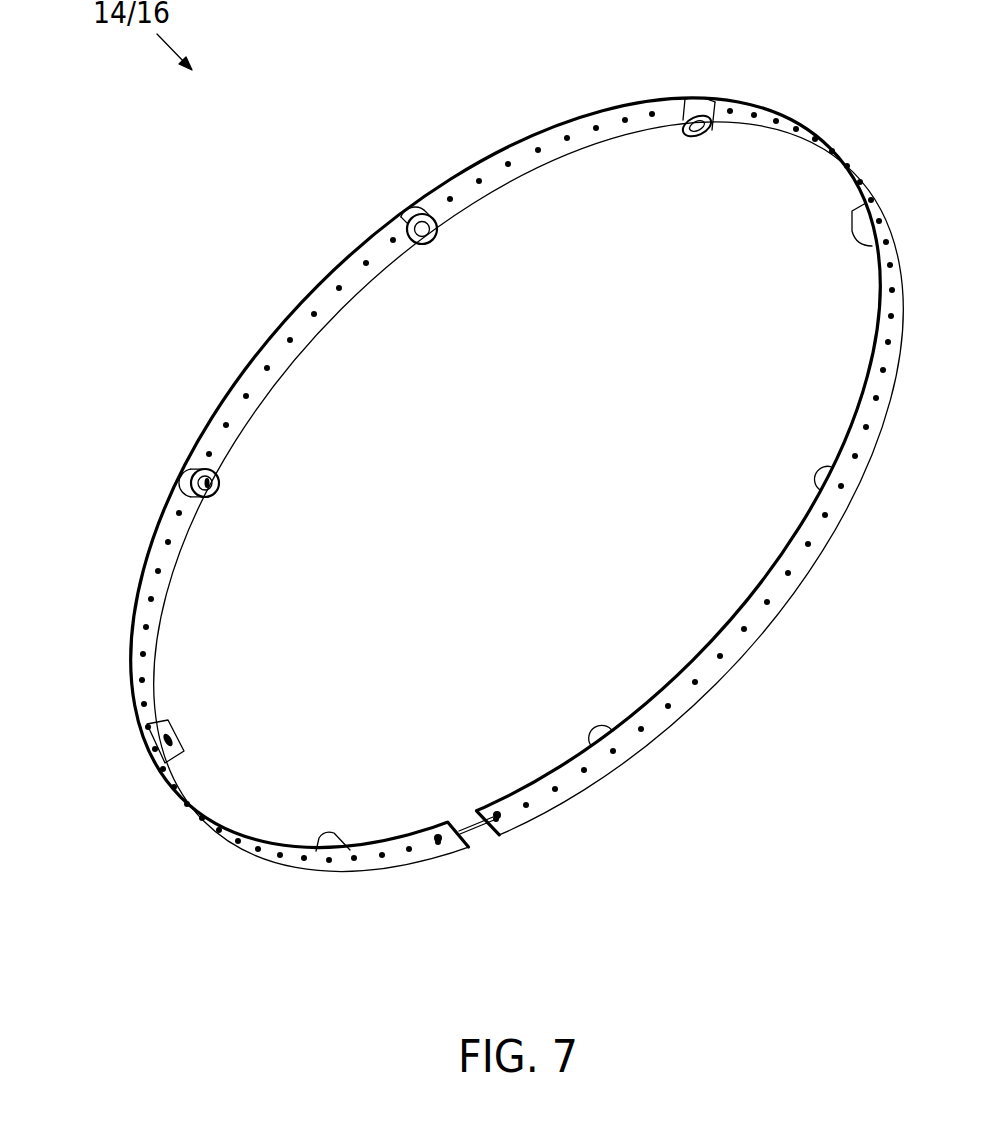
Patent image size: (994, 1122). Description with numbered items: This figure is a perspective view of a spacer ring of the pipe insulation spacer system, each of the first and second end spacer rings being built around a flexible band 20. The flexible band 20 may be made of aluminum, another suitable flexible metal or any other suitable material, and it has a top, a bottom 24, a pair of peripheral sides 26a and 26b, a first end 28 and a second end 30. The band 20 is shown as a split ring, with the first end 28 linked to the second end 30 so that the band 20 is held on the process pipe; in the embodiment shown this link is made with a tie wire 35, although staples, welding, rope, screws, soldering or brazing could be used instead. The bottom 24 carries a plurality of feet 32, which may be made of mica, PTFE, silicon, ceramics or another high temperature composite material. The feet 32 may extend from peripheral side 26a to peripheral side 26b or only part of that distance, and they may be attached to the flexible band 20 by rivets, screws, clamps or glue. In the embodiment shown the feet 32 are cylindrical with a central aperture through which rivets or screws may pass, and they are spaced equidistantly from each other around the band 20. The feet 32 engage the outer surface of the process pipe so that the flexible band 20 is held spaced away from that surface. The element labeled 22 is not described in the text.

The flexible band 20 is at (497, 504).
The band body / outer surface 22 is at (737, 640).
The bottom 24 is at (148, 607).
The peripheral side 26a is at (230, 387).
The peripheral side 26b is at (372, 294).
The first end 28 is at (502, 820).
The second end 30 is at (443, 847).
The feet 32 is at (333, 830).
The tie wire 35 is at (480, 818).